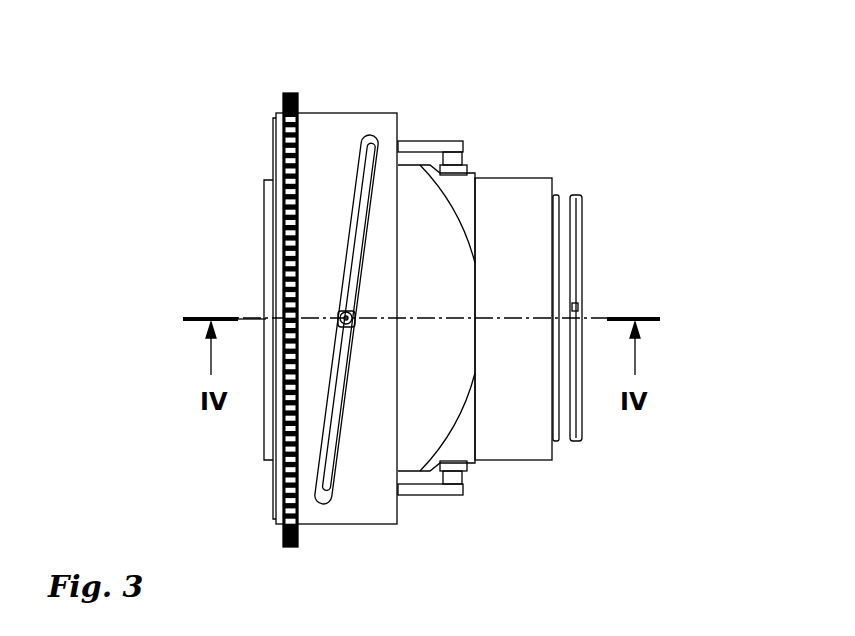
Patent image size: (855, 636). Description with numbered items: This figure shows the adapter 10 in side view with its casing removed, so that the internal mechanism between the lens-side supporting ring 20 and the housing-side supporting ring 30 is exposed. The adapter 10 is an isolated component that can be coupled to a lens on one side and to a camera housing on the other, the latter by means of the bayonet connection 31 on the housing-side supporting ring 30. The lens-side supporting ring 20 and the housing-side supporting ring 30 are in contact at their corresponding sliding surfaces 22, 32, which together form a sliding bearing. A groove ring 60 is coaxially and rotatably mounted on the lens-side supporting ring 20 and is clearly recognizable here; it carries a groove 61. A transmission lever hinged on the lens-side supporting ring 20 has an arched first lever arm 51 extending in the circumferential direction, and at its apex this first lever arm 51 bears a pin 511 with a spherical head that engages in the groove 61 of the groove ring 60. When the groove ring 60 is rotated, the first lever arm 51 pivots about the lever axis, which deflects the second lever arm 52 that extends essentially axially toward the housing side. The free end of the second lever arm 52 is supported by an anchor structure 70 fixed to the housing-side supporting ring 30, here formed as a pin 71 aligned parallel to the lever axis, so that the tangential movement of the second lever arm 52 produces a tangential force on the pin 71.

The adapter 10 is at (134, 180).
The lens-side supporting ring 20 is at (265, 197).
The sliding surface 22 is at (476, 208).
The housing-side supporting ring 30 is at (512, 190).
The bayonet connection 31 is at (572, 425).
The sliding surface 32 is at (462, 260).
The first lever arm 51 is at (351, 279).
The pin 511 is at (340, 318).
The second lever arm 52 is at (425, 147).
The groove ring 60 is at (330, 130).
The groove 61 is at (373, 177).
The anchor structure 70 is at (452, 160).
The pin 71 is at (536, 38).